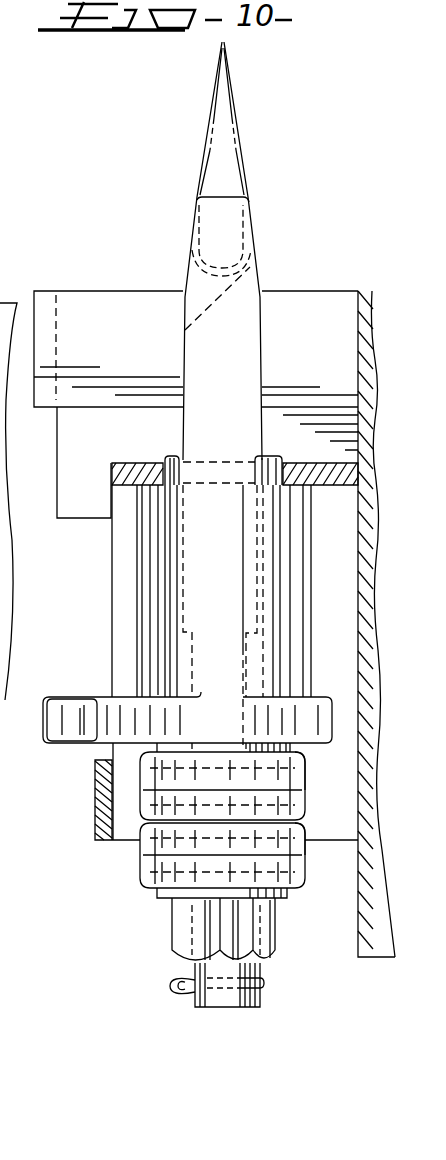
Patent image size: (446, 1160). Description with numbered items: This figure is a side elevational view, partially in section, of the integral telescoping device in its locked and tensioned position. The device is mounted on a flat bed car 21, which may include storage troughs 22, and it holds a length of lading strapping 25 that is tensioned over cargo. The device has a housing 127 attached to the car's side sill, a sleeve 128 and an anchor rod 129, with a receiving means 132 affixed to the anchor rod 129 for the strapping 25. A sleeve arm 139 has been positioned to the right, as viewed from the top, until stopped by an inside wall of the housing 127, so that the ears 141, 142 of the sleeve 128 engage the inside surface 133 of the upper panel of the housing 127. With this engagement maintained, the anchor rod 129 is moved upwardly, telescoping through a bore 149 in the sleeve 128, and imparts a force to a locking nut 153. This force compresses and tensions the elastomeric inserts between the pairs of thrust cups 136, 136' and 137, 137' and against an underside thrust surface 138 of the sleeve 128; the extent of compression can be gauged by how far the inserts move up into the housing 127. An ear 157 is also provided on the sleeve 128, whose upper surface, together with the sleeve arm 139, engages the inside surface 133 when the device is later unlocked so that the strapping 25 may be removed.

The flat bed car 21 is at (96, 327).
The storage trough 22 is at (100, 463).
The lading strapping 25 is at (245, 160).
The housing 127 is at (97, 810).
The sleeve 128 is at (175, 583).
The anchor rod 129 is at (232, 384).
The receiving means 132 is at (218, 222).
The inside surface 133 is at (335, 488).
The thrust cup 136 is at (246, 789).
The thrust cup 136' is at (330, 771).
The thrust cup 137 is at (244, 868).
The thrust cup 137' is at (327, 847).
The underside thrust surface 138 is at (230, 754).
The sleeve arm 139 is at (70, 733).
The ear 141 is at (137, 553).
The ear 142 is at (300, 567).
The bore 149 is at (264, 458).
The locking nut 153 is at (177, 934).
The ear 157 is at (346, 680).